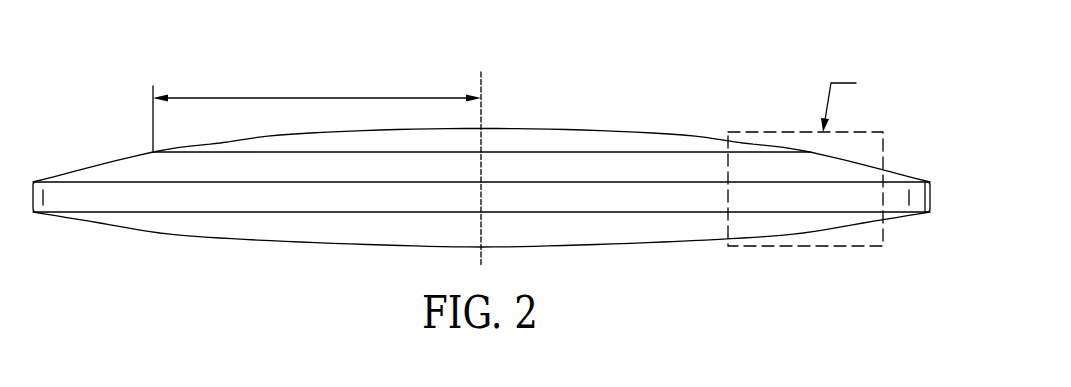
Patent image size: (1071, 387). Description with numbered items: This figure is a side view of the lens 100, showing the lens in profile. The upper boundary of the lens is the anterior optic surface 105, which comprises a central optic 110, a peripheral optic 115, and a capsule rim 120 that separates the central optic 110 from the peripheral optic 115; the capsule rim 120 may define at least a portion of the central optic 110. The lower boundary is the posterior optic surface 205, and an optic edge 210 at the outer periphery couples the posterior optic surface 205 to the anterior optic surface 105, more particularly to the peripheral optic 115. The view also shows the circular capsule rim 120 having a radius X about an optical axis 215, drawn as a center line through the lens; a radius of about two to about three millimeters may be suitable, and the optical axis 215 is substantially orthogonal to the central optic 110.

The lens 100 is at (178, 55).
The anterior optic surface 105 is at (97, 164).
The central optic 110 is at (593, 129).
The peripheral optic 115 is at (902, 177).
The capsule rim 120 is at (652, 150).
The posterior optic surface 205 is at (222, 238).
The optic edge 210 is at (932, 201).
The optical axis 215 is at (482, 77).